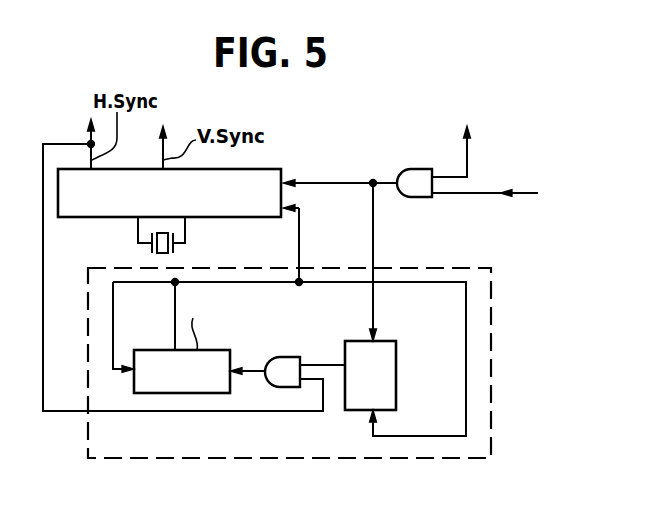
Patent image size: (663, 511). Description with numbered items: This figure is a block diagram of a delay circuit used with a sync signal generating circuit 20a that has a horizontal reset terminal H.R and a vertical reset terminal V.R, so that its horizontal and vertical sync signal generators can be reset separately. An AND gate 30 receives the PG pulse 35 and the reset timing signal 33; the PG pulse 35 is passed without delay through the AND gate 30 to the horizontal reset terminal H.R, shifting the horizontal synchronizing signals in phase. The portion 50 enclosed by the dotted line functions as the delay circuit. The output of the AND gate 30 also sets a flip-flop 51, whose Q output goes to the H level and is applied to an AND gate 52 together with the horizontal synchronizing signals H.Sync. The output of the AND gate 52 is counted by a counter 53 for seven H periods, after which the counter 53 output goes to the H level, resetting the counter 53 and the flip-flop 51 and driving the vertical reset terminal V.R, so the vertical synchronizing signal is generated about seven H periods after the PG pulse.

The sync signal generating circuit 20a is at (77, 217).
The AND gate 30 is at (423, 198).
The reset timing signal 33 is at (467, 160).
The PG pulse 35 is at (480, 195).
The portion enclosed by the dotted line 50 is at (261, 459).
The flip-flop 51 is at (396, 395).
The AND gate 52 is at (270, 358).
The counter 53 is at (180, 395).